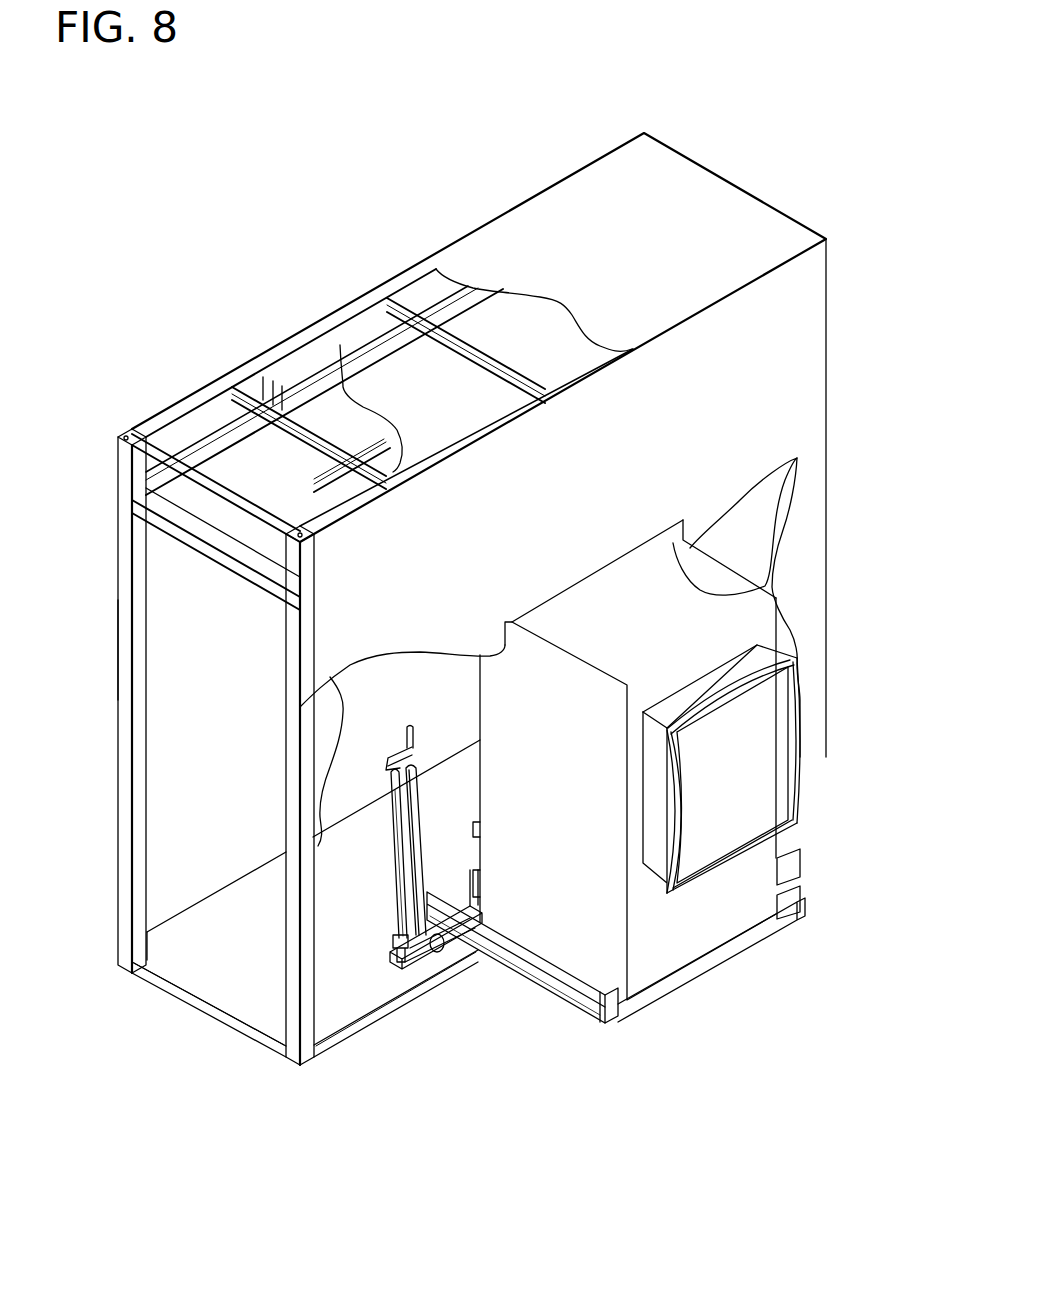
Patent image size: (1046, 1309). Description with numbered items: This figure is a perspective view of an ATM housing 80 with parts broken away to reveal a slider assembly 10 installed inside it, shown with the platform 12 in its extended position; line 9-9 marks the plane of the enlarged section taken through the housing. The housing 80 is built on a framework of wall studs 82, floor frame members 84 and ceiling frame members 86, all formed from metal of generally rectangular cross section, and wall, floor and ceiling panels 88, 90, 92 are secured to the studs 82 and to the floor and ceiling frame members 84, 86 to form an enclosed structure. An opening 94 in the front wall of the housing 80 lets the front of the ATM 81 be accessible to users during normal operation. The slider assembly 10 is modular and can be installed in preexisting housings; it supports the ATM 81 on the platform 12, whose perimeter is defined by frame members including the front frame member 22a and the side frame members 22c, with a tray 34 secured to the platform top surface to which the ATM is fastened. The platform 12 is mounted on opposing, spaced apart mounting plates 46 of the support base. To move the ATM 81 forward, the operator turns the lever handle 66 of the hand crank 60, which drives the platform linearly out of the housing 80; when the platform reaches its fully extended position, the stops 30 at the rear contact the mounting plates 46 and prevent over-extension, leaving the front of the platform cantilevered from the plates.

The ATM housing 80 is at (766, 101).
The ceiling panel 92 is at (725, 222).
The wall panels 88 is at (393, 384).
The ceiling frame members 86 is at (220, 392).
The wall studs 82 is at (293, 748).
The opening 94 is at (730, 595).
The lever handle 66 is at (410, 730).
The hand crank 60 is at (380, 944).
The mounting plates 46 is at (450, 965).
The floor panel 90 is at (215, 913).
The floor frame members 84 is at (200, 1003).
The ATM 81 is at (733, 878).
The tray 34 is at (787, 898).
The stops 30 is at (790, 922).
The front frame member 22a is at (678, 980).
The side frame members 22c is at (565, 1007).
The slider assembly 10 is at (760, 976).
The platform 12 is at (524, 995).
The section line 9- 9 is at (100, 853).